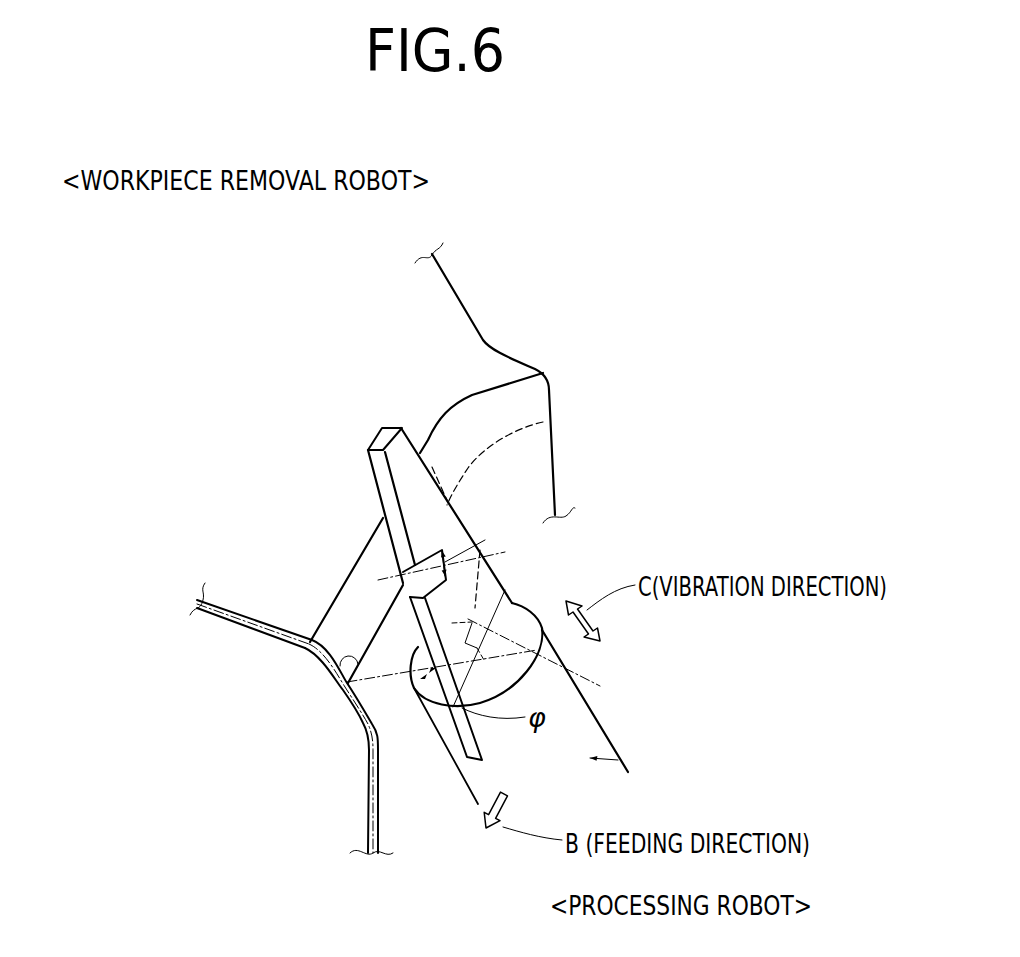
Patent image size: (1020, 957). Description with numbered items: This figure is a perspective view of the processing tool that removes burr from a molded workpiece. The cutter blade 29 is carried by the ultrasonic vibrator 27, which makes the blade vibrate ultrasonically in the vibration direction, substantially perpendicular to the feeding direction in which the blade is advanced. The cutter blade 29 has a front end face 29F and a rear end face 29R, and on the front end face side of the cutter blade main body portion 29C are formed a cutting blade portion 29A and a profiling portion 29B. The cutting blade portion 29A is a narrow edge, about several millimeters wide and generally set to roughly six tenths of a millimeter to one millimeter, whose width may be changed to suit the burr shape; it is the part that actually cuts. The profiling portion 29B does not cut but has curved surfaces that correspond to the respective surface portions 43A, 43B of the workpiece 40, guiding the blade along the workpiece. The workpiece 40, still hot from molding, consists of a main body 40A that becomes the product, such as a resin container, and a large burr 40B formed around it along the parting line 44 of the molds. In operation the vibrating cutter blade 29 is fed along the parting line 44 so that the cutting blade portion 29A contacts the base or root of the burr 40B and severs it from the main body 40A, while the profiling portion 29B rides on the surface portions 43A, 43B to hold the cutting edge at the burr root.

The cutter blade 29 is at (401, 604).
The rear end face 29R is at (430, 478).
The front end face 29F is at (378, 487).
The profiling portion 29B is at (380, 533).
The cutting blade portion 29A is at (403, 580).
The cutter blade main body portion 29C is at (452, 518).
The ultrasonic vibrator 27 is at (618, 760).
The workpiece 40 is at (222, 633).
The main body 40A is at (263, 598).
The burr 40B is at (588, 678).
The surface portion 43A is at (338, 642).
The surface portion 43B is at (383, 705).
The parting line 44 is at (333, 677).